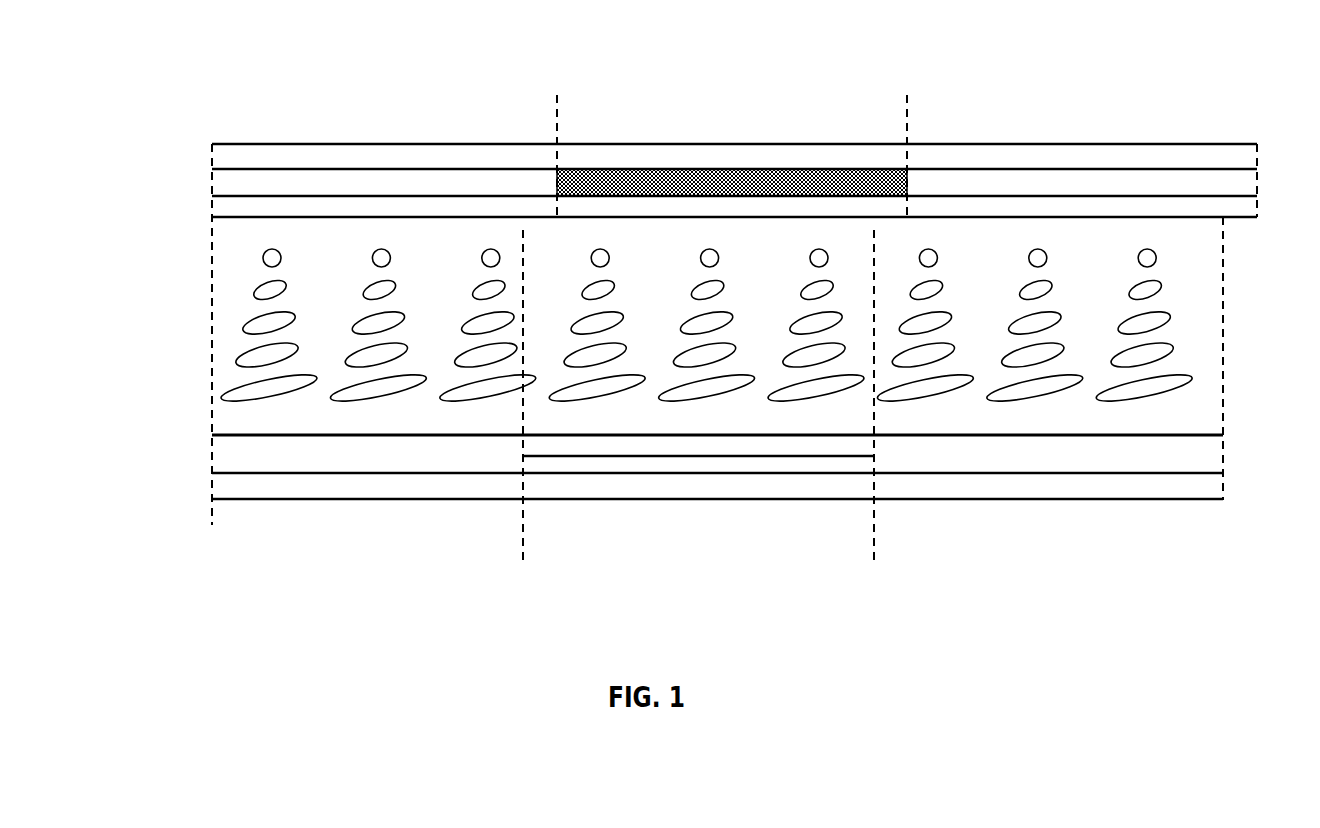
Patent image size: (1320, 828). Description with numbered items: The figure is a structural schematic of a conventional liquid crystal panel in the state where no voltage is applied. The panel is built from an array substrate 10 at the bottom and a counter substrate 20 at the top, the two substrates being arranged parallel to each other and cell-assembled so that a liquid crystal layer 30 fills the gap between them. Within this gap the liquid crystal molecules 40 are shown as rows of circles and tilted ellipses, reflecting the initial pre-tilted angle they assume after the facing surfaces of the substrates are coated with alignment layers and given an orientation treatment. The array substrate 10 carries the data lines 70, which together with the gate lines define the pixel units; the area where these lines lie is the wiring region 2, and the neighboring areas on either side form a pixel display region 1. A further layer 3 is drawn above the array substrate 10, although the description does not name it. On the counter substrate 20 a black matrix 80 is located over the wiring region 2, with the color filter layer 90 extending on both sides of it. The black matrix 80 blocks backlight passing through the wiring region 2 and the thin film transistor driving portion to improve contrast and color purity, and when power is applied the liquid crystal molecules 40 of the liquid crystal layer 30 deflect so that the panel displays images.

The pixel display region 1 is at (354, 510).
The wiring region 2 is at (657, 510).
The intermediate layer 3 is at (1185, 452).
The array substrate 10 is at (225, 490).
The counter substrate 20 is at (228, 157).
The liquid crystal layer 30 is at (210, 270).
The liquid crystal molecules 40 is at (818, 257).
The data lines 70 is at (730, 464).
The black matrix 80 is at (715, 168).
The color filter layer 90 is at (340, 180).